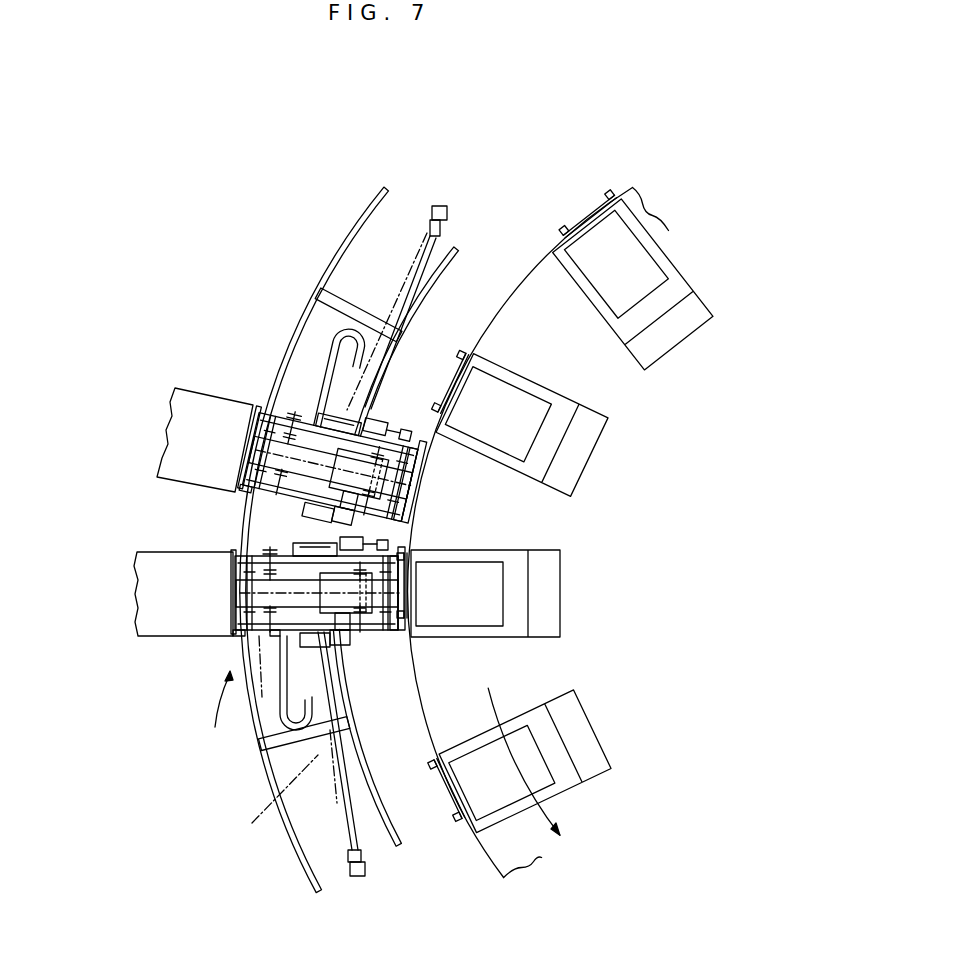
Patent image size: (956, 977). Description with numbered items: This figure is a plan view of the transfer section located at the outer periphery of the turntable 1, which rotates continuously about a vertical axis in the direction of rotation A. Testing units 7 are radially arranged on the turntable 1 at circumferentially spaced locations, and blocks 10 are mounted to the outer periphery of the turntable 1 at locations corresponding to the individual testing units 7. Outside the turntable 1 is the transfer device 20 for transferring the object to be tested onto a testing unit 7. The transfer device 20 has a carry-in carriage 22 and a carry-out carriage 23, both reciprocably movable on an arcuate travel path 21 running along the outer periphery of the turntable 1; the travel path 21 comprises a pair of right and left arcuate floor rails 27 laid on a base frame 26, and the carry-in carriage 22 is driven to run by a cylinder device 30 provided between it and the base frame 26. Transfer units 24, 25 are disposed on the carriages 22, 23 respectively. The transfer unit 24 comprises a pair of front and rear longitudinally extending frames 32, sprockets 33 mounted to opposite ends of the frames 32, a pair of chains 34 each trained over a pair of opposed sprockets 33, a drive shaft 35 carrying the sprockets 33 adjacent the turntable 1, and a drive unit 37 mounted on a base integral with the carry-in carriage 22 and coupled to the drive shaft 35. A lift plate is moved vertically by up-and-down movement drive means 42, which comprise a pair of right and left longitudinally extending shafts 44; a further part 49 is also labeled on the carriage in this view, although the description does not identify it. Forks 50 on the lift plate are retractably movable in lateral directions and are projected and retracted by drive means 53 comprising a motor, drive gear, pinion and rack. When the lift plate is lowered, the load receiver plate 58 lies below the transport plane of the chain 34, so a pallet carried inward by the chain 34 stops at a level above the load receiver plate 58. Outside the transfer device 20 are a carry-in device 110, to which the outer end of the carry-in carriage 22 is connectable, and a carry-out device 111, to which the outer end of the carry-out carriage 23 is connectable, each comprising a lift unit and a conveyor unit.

The turntable 1 is at (536, 286).
The testing unit 7 is at (590, 458).
The block 10 is at (596, 207).
The transfer device 20 is at (215, 714).
The arcuate travel path 21 is at (327, 543).
The carry-in carriage 22 is at (232, 634).
The carry-out carriage 23 is at (244, 488).
The transfer unit 24 is at (275, 633).
The transfer unit 25 is at (272, 424).
The base frame 26 is at (268, 750).
The floor rail 27 is at (395, 831).
The cylinder device 30 is at (402, 300).
The frame 32 is at (260, 408).
The sprocket 33 is at (246, 470).
The chain 34 is at (284, 492).
The drive shaft 35 is at (412, 506).
The drive unit 37 is at (292, 403).
The up-and-down movement drive means 42 is at (376, 428).
The shaft 44 is at (351, 530).
The actuator 49 is at (300, 551).
The fork 50 is at (262, 452).
The drive means 53 is at (334, 672).
The load receiver plate 58 is at (413, 482).
The carry-in device 110 is at (137, 602).
The carry-out device 111 is at (173, 430).
The direction of rotation A is at (592, 816).